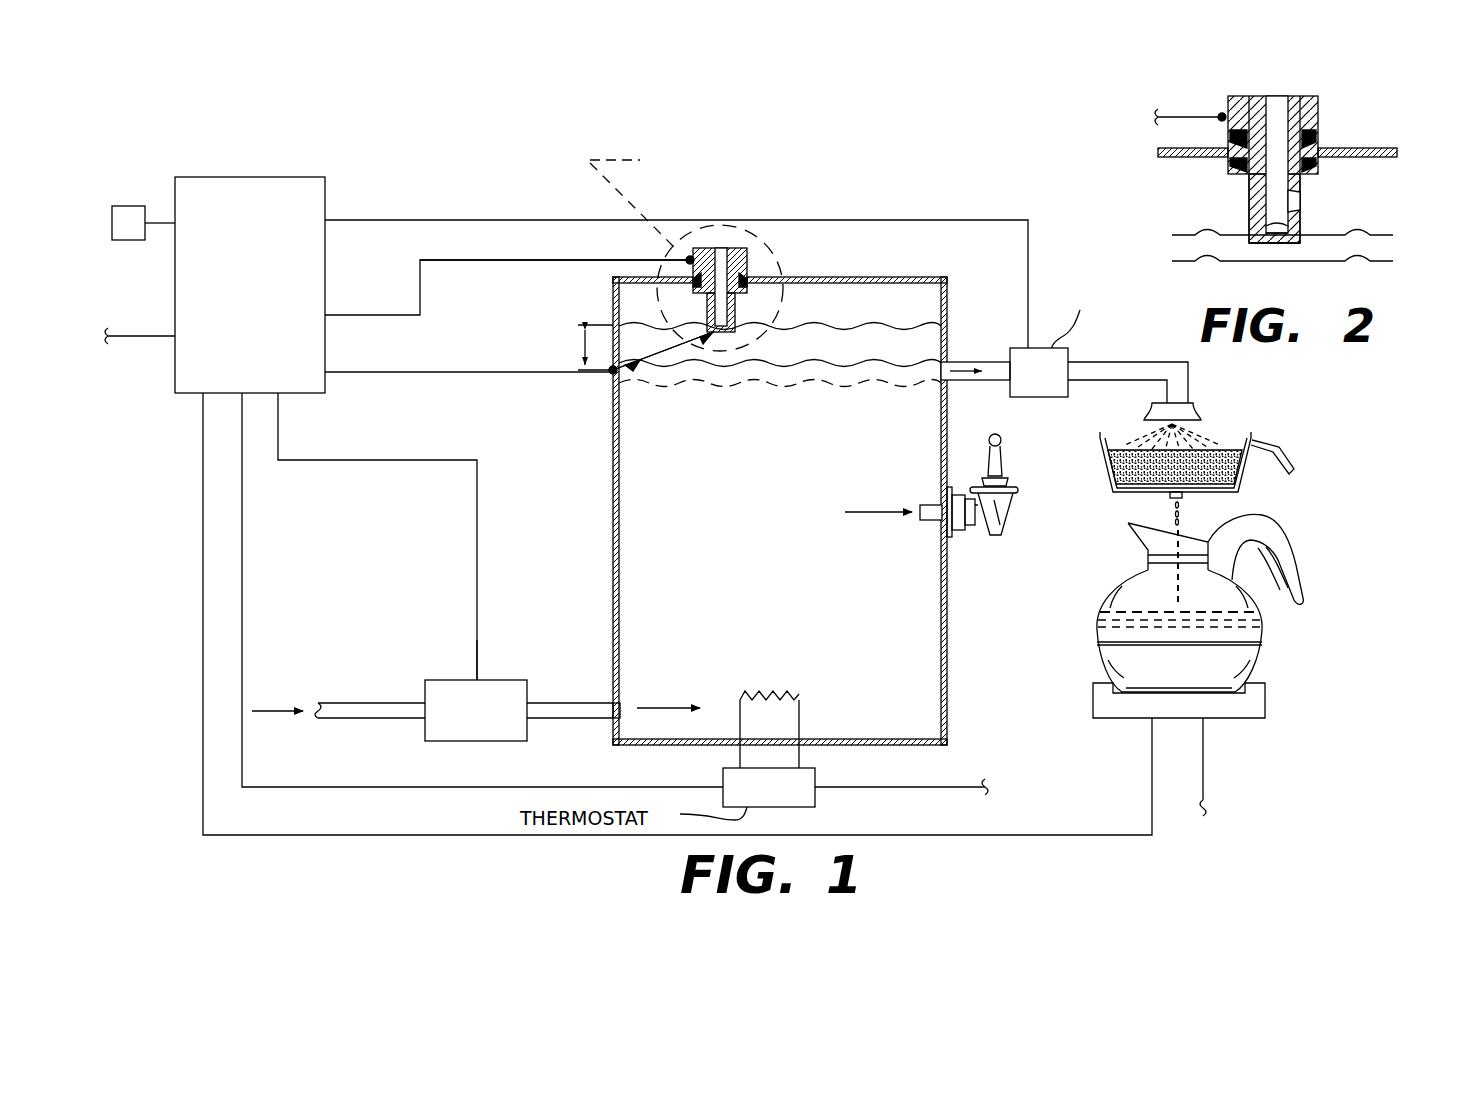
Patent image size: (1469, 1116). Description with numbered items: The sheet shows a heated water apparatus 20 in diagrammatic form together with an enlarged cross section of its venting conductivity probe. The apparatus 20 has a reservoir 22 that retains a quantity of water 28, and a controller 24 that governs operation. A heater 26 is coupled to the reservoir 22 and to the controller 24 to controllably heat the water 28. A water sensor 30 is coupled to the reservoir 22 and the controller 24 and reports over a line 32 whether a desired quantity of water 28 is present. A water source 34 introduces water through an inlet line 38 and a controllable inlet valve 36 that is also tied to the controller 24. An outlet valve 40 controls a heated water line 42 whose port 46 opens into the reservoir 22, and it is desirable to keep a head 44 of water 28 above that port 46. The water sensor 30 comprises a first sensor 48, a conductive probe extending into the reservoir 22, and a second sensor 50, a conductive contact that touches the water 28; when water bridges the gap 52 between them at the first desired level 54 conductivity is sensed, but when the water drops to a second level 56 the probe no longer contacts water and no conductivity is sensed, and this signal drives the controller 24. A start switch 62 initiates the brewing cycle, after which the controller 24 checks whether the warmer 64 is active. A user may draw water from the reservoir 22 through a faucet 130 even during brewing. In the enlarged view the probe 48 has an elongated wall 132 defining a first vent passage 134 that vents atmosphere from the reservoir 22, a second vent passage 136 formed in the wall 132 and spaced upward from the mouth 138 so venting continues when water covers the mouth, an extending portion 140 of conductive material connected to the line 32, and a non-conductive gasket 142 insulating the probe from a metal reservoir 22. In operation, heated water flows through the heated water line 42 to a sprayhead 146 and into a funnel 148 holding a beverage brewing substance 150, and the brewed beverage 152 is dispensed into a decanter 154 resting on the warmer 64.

In FIG. 1, the heated water apparatus 20 is at (260, 124).
In FIG. 1, the reservoir 22 is at (960, 673).
In FIG. 2, the reservoir 22 is at (1375, 146).
In FIG. 1, the controller 24 is at (175, 290).
In FIG. 1, the heater 26 is at (827, 758).
In FIG. 1, the water 28 is at (650, 590).
In FIG. 1, the water sensor 30 is at (598, 285).
In FIG. 1, the line 32 is at (455, 262).
In FIG. 2, the line 32 is at (1196, 117).
In FIG. 1, the water source 34 is at (478, 753).
In FIG. 1, the inlet valve 36 is at (497, 680).
In FIG. 1, the inlet line 38 is at (359, 718).
In FIG. 1, the outlet valve 40 is at (1014, 348).
In FIG. 1, the heated water line 42 is at (1100, 362).
In FIG. 1, the head 44 is at (578, 345).
In FIG. 1, the port 46 is at (937, 380).
In FIG. 1, the first sensor 48 is at (764, 237).
In FIG. 2, the first sensor 48 is at (1297, 74).
In FIG. 1, the second sensor 50 is at (616, 374).
In FIG. 1, the gap 52 is at (668, 350).
In FIG. 1, the first desired level 54 is at (859, 327).
In FIG. 1, the second level 56 is at (809, 367).
In FIG. 1, the start switch 62 is at (130, 206).
In FIG. 1, the warmer 64 is at (1265, 710).
In FIG. 1, the faucet 130 is at (1004, 527).
In FIG. 2, the wall 132 is at (1257, 218).
In FIG. 2, the first vent passage 134 is at (1274, 238).
In FIG. 2, the second vent passage 136 is at (1304, 204).
In FIG. 2, the mouth 138 is at (1290, 244).
In FIG. 2, the extending portion 140 is at (1319, 128).
In FIG. 2, the non-conductive gasket 142 is at (1228, 134).
In FIG. 1, the sprayhead 146 is at (1200, 409).
In FIG. 1, the funnel 148 is at (1105, 449).
In FIG. 1, the beverage brewing substance 150 is at (1116, 468).
In FIG. 1, the brewed beverage 152 is at (1180, 512).
In FIG. 1, the decanter 154 is at (1257, 624).